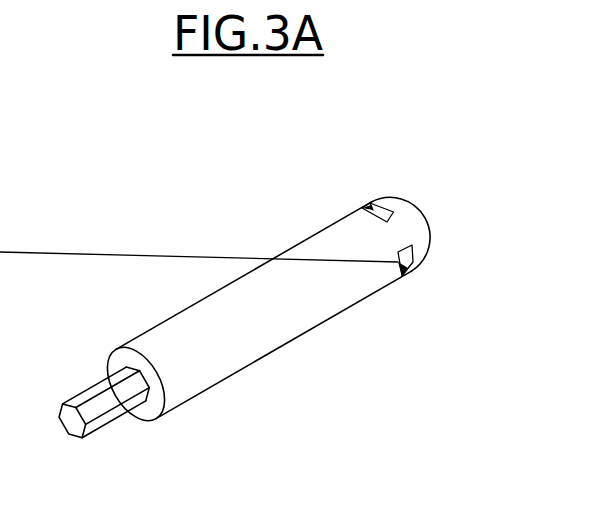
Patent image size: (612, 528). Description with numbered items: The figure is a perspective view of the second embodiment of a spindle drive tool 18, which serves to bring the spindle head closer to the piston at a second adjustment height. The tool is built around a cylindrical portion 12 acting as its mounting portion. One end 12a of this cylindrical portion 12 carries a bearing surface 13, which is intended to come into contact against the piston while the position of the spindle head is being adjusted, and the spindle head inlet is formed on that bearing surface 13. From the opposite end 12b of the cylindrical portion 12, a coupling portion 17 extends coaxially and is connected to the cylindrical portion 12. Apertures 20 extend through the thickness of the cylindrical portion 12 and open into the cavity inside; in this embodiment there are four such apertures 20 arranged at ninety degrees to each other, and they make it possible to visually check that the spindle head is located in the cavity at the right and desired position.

The spindle drive tool 18 is at (136, 225).
The cylindrical portion 12 is at (249, 267).
The end of the cylindrical portion 12a is at (427, 210).
The opposite end of the cylindrical portion 12b is at (133, 343).
The bearing surface 13 is at (426, 217).
The coupling portion 17 is at (117, 428).
The aperture 20 is at (371, 201).